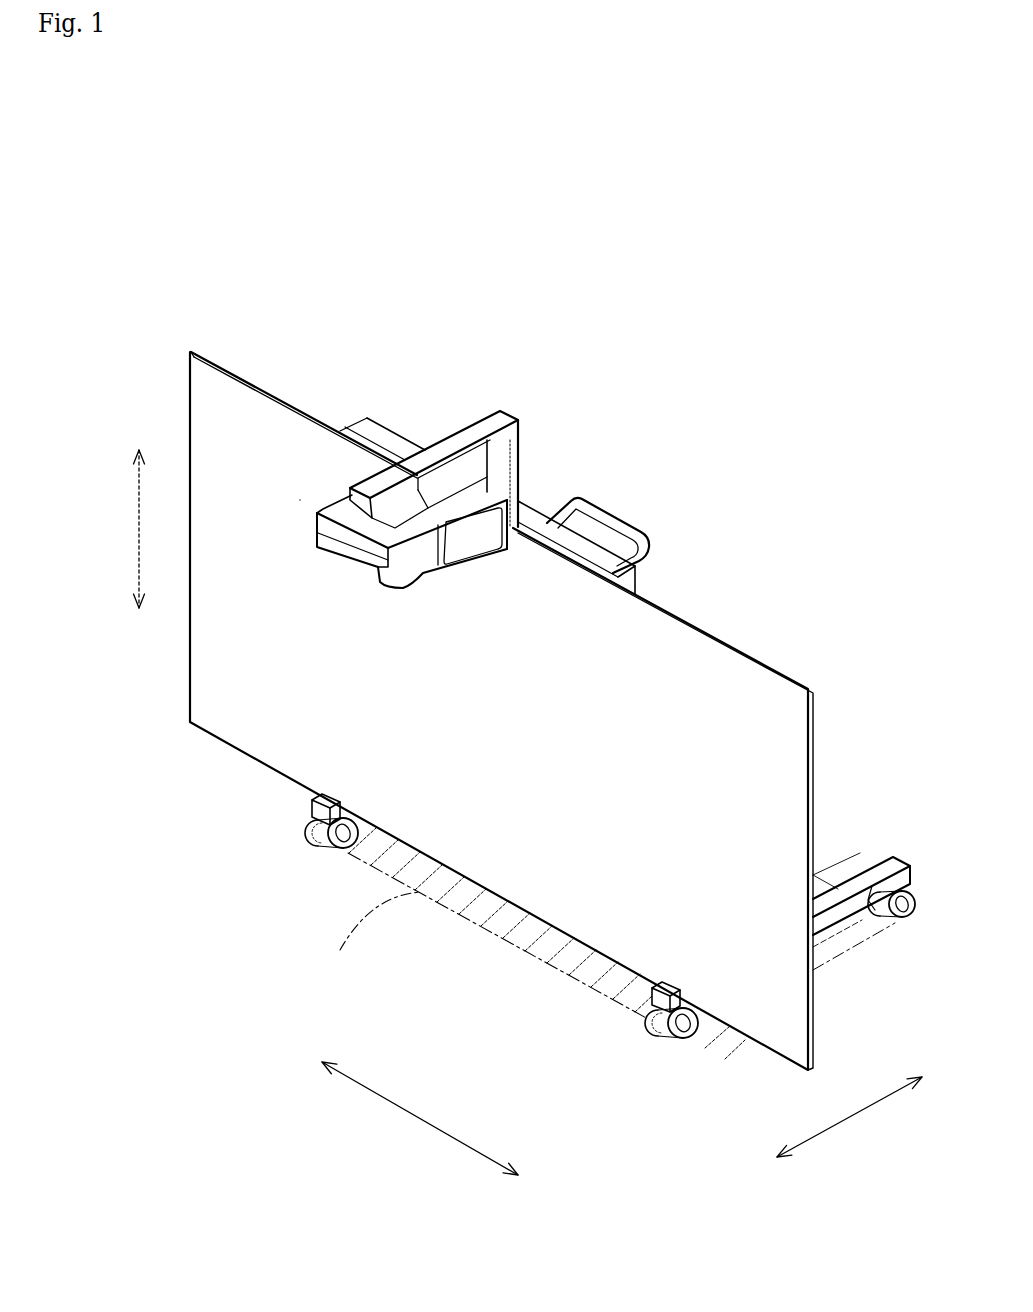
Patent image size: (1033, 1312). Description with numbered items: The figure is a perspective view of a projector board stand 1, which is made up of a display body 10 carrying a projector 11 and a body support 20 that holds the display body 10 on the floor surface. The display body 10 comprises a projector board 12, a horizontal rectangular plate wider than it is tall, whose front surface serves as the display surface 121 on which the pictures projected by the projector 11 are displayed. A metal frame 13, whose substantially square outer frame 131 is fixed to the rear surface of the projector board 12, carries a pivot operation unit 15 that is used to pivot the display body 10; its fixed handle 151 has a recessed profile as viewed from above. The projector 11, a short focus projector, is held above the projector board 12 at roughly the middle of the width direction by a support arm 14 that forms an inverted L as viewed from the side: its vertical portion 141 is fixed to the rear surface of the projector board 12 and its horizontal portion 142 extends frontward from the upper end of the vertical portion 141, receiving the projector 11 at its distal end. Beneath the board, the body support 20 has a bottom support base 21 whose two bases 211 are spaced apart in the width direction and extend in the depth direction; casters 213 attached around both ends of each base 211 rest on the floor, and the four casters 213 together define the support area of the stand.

The projector board stand 1 is at (765, 400).
The display body 10 is at (785, 605).
The projector 11 is at (318, 520).
The projector board 12 is at (772, 660).
The display surface 121 is at (692, 650).
The frame 13 is at (506, 506).
The outer frame 131 is at (546, 512).
The support arm 14 is at (553, 300).
The vertical portion 141 is at (527, 447).
The horizontal portion 142 is at (457, 443).
The pivot operation unit 15 is at (646, 522).
The fixed handle 151 is at (622, 520).
The body support 20 is at (576, 936).
The bottom support base 21 is at (857, 857).
The base 211 is at (880, 868).
The caster 213 is at (312, 824).